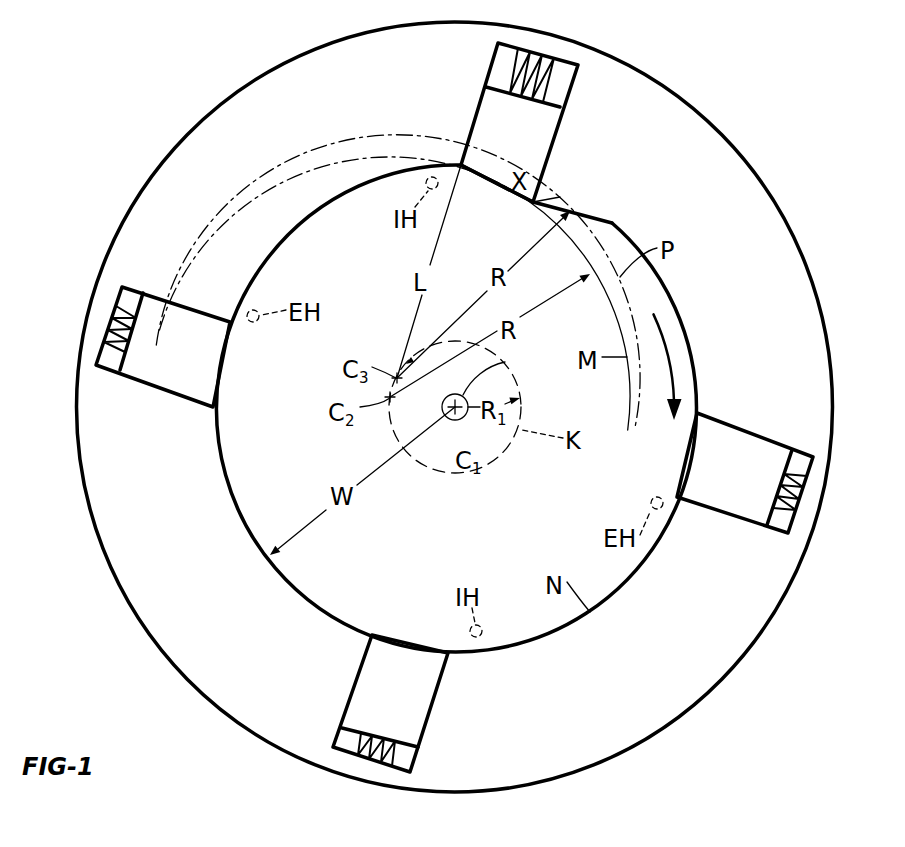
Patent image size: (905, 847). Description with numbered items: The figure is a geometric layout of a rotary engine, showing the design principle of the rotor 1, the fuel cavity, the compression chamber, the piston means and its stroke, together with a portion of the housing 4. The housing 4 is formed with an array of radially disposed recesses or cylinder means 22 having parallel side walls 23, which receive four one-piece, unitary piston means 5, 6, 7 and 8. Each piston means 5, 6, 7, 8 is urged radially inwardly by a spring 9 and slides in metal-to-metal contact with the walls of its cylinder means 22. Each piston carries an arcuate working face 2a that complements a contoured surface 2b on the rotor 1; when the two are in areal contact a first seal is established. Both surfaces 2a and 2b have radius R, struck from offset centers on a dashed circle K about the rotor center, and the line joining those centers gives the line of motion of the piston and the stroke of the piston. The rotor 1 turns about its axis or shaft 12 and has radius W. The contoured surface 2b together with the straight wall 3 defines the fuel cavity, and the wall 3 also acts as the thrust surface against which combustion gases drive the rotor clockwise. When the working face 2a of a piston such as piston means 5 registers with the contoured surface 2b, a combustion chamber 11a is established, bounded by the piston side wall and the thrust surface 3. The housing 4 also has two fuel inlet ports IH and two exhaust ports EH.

The rotor 1 is at (356, 260).
The arcuate working face 2a is at (215, 352).
The contoured surface 2b is at (488, 175).
The straight wall 3 is at (548, 212).
The housing 4 is at (200, 118).
The piston means 5 is at (522, 134).
The piston means 6 is at (768, 498).
The piston means 7 is at (403, 700).
The piston means 8 is at (188, 353).
The spring 9 is at (520, 78).
The combustion chamber 11a is at (536, 203).
The shaft 12 is at (505, 363).
The cylinder means 22 is at (460, 102).
The side walls 23 is at (550, 157).